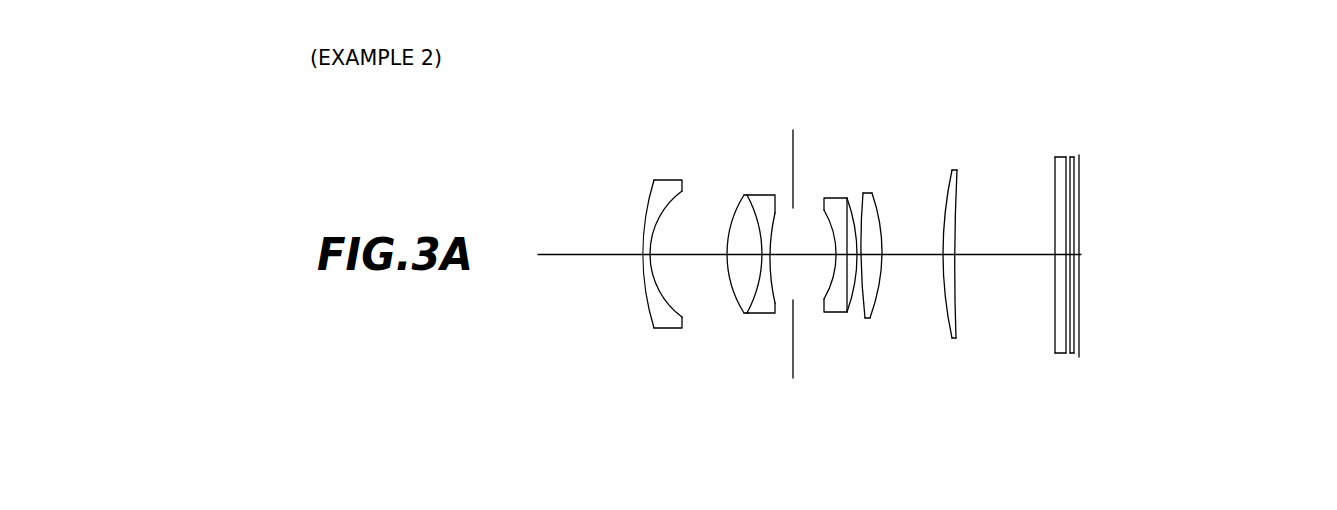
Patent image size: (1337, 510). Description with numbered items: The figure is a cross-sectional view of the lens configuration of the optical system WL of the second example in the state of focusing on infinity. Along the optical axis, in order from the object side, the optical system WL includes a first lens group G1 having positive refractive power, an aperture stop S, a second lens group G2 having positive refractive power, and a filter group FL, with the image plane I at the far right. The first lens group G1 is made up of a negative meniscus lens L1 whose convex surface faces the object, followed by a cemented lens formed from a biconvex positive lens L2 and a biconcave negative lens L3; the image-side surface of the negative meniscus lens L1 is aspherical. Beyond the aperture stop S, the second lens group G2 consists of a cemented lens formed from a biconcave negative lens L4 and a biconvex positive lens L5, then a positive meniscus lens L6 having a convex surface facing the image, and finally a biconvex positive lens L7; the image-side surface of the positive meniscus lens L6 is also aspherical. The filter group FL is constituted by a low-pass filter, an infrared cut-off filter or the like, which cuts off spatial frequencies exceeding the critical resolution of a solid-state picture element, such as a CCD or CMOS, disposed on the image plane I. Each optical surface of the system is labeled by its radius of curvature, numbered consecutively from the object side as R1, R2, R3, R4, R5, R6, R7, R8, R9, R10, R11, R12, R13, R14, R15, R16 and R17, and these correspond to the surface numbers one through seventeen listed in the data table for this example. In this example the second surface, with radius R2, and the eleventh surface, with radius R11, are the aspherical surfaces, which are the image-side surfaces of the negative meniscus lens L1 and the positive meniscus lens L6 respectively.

The optical system WL is at (1230, 114).
The first lens group G1 is at (772, 405).
The second lens group G2 is at (982, 405).
The negative meniscus lens L1 is at (664, 328).
The biconvex positive lens L2 is at (746, 313).
The biconcave negative lens L3 is at (763, 313).
The biconcave negative lens L4 is at (832, 312).
The biconvex positive lens L5 is at (850, 312).
The positive meniscus lens L6 is at (866, 318).
The biconvex positive lens L7 is at (955, 338).
The aperture stop S is at (793, 378).
The filter group FL is at (1047, 368).
The image plane I is at (1080, 357).
The radius of curvature R1 is at (646, 181).
The radius of curvature R2 is at (674, 200).
The radius of curvature R3 is at (742, 205).
The radius of curvature R4 is at (755, 200).
The radius of curvature R5 is at (762, 197).
The radius of curvature R6 is at (793, 130).
The radius of curvature R7 is at (823, 216).
The radius of curvature R8 is at (847, 203).
The radius of curvature R9 is at (858, 206).
The radius of curvature R10 is at (863, 192).
The radius of curvature R11 is at (880, 207).
The radius of curvature R12 is at (955, 183).
The radius of curvature R13 is at (960, 183).
The radius of curvature R14 is at (1054, 165).
The radius of curvature R15 is at (1065, 157).
The radius of curvature R16 is at (1072, 157).
The radius of curvature R17 is at (1077, 157).